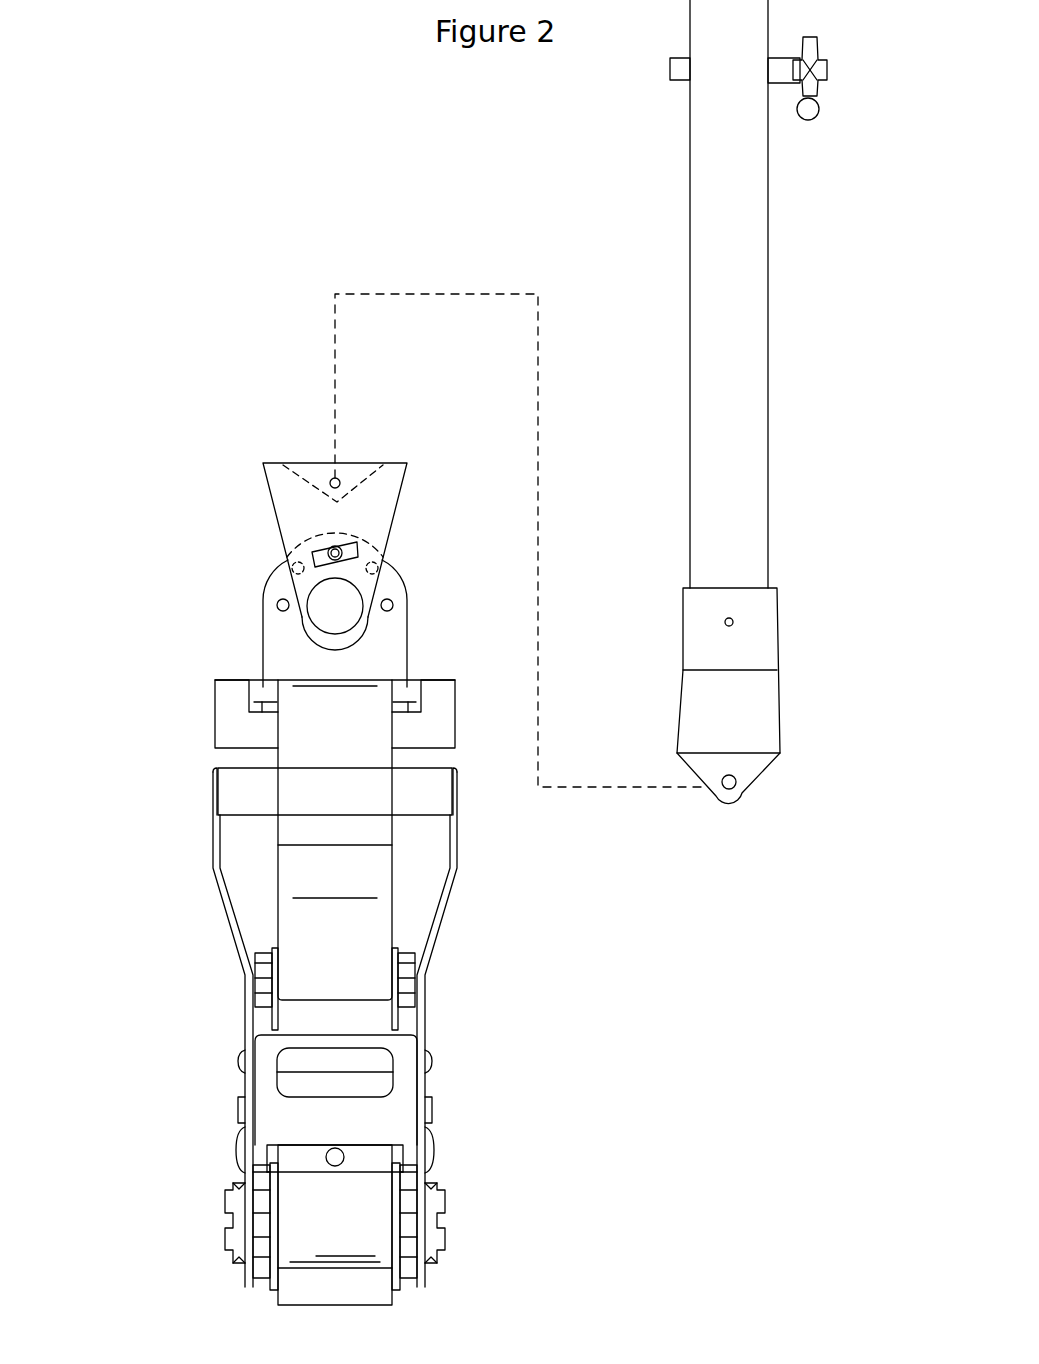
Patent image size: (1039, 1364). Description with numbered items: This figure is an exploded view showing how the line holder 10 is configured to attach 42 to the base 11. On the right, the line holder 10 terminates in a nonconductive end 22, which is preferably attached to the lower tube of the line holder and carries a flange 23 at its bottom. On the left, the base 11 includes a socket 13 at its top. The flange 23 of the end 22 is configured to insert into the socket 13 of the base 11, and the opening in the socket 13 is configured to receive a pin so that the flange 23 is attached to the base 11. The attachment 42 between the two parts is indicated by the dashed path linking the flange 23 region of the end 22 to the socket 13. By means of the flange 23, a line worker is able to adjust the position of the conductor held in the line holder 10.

The line holder 10 is at (813, 512).
The base 11 is at (148, 674).
The socket 13 is at (266, 485).
The nonconductive end 22 is at (778, 702).
The flange 23 is at (765, 770).
The attachment 42 is at (442, 292).